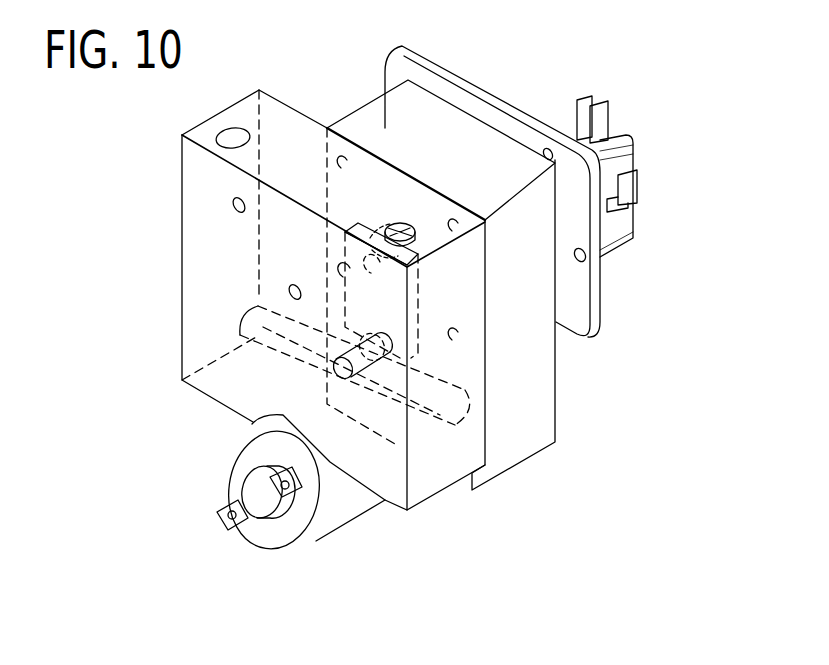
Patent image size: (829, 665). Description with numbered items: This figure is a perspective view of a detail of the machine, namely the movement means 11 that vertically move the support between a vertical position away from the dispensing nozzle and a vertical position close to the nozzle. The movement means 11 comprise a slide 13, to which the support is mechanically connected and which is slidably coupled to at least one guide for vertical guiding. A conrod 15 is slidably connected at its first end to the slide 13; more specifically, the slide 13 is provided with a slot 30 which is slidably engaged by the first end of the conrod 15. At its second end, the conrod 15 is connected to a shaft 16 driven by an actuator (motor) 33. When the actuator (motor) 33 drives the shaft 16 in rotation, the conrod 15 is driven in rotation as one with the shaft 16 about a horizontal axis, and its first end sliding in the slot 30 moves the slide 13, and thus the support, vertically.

The movement means 11 is at (322, 342).
The slide 13 is at (172, 263).
The conrod 15 is at (428, 309).
The shaft 16 is at (397, 214).
The slot 30 is at (384, 418).
The actuator (motor) 33 is at (345, 538).